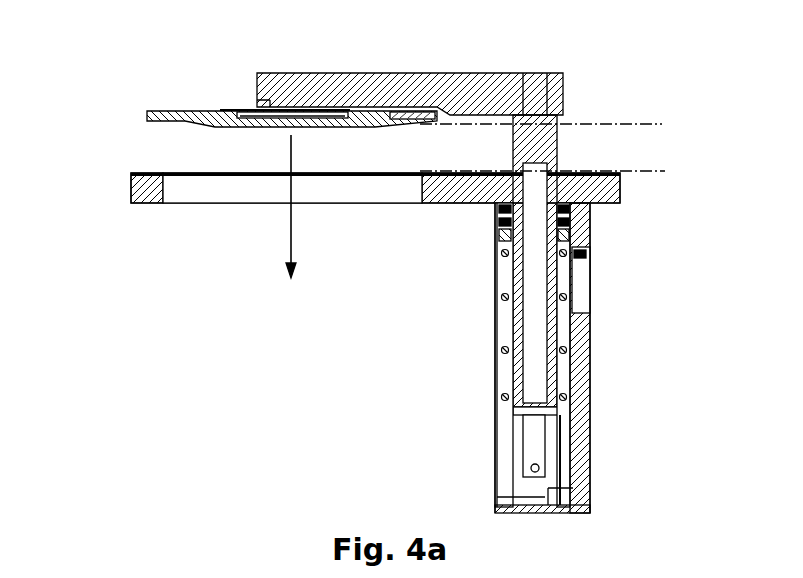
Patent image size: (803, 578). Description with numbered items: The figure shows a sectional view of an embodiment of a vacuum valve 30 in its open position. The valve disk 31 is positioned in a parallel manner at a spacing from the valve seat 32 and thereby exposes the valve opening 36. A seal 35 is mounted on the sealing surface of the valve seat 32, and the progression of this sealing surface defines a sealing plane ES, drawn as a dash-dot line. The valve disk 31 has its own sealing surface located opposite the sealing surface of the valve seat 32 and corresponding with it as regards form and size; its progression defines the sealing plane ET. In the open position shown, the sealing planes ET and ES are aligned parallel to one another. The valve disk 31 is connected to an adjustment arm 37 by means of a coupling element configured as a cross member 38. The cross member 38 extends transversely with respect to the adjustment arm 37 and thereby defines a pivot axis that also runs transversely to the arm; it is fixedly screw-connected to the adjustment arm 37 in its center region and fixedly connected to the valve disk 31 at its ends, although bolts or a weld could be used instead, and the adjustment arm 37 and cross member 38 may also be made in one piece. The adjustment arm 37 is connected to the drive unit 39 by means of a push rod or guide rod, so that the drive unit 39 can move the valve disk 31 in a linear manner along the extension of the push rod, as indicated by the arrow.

The vacuum valve 30 is at (124, 19).
The valve disk 31 is at (193, 118).
The valve seat 32 is at (135, 195).
The seal 35 is at (152, 176).
The valve opening 36 is at (212, 195).
The adjustment arm 37 is at (477, 83).
The cross member 38 is at (285, 110).
The drive unit 39 is at (624, 415).
The sealing plane of the valve disk ET is at (620, 123).
The sealing plane of the valve seat ES is at (645, 171).